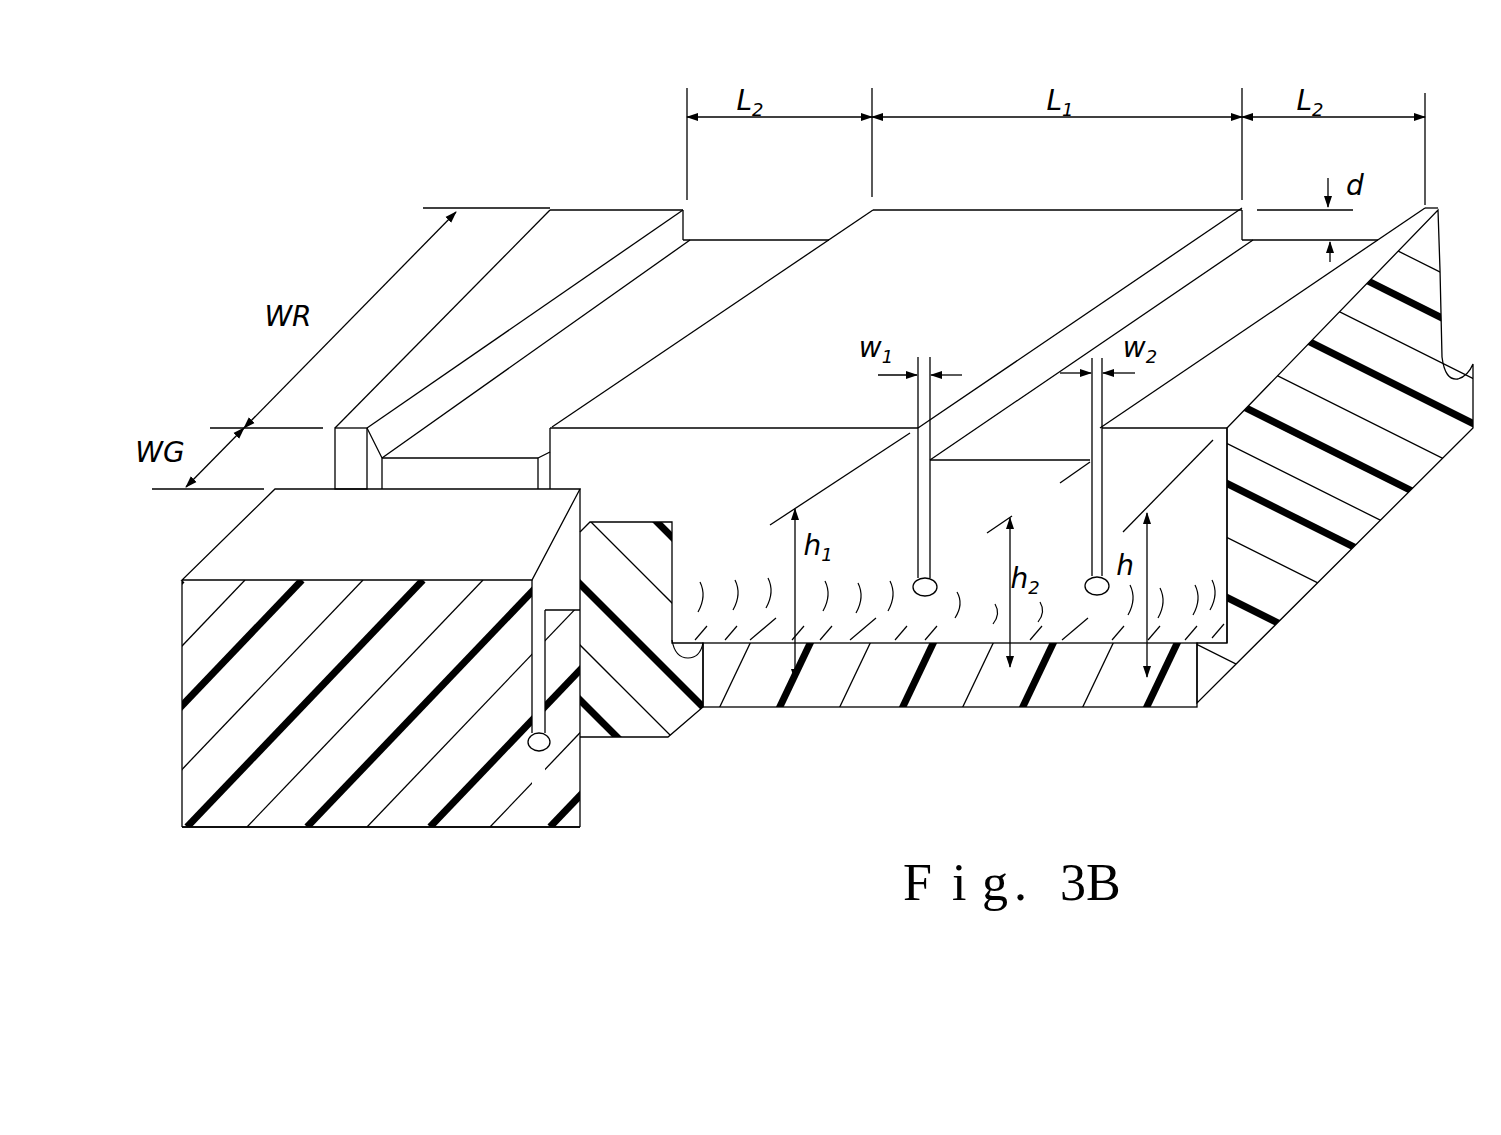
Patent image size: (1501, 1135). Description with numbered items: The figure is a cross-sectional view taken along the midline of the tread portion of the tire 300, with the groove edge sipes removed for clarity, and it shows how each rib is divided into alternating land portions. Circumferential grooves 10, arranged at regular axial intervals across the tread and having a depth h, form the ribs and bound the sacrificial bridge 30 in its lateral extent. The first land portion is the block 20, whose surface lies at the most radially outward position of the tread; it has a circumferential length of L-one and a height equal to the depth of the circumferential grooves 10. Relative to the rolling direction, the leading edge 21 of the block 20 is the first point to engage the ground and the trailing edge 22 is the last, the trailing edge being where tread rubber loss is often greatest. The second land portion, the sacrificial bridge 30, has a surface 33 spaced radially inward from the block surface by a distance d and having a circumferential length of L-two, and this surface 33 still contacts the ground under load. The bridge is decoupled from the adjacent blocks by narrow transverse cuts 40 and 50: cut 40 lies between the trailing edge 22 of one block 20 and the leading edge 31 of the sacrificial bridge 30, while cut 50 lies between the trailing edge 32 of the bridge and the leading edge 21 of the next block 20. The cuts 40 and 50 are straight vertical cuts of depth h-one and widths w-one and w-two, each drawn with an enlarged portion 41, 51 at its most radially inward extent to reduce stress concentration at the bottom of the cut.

The circumferential grooves 10 is at (323, 474).
The block 20 is at (495, 299).
The leading edge 21 is at (788, 267).
The trailing edge 22 is at (611, 256).
The sacrificial bridge 30 is at (569, 361).
The leading edge of the sacrificial bridge 31 is at (664, 265).
The trailing edge of the sacrificial bridge 32 is at (539, 444).
The surface of the sacrificial bridge 33 is at (772, 260).
The cut 40 is at (923, 535).
The optical fiber end 41 is at (927, 596).
The cut 50 is at (1098, 500).
The optical fiber end 51 is at (1090, 595).
The tire 300 is at (412, 838).